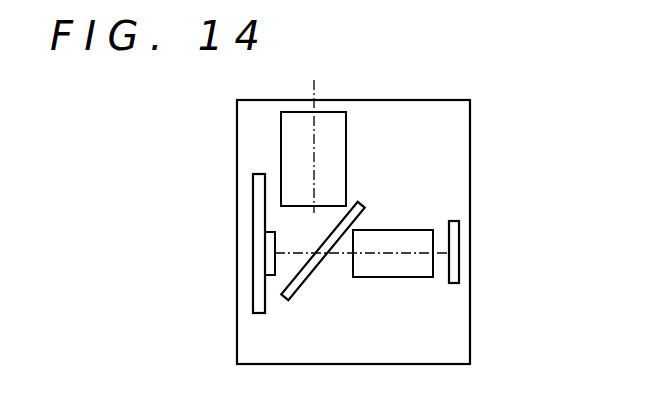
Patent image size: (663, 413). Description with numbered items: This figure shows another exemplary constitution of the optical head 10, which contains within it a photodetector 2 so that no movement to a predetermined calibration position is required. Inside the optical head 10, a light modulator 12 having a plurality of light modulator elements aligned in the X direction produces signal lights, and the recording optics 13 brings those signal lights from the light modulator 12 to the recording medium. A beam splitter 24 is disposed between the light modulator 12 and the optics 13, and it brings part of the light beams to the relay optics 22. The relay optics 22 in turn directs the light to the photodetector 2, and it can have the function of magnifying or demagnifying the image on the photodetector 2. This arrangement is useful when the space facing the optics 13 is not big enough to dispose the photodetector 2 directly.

The optical head 10 is at (470, 343).
The recording optics 13 is at (349, 143).
The light modulator 12 is at (275, 268).
The beam splitter 24 is at (309, 278).
The relay optics 22 is at (433, 240).
The photodetector 2 is at (459, 267).